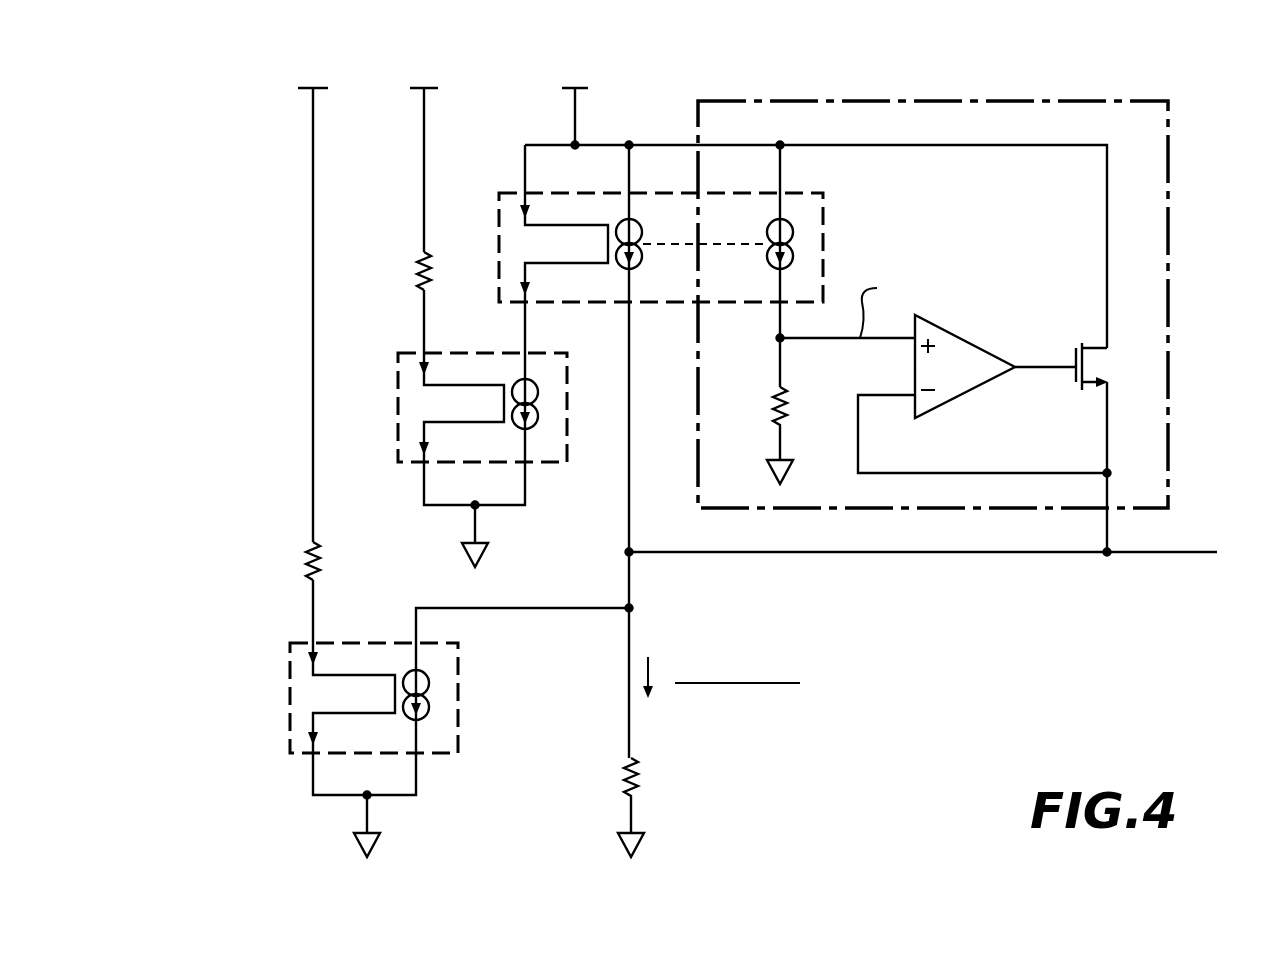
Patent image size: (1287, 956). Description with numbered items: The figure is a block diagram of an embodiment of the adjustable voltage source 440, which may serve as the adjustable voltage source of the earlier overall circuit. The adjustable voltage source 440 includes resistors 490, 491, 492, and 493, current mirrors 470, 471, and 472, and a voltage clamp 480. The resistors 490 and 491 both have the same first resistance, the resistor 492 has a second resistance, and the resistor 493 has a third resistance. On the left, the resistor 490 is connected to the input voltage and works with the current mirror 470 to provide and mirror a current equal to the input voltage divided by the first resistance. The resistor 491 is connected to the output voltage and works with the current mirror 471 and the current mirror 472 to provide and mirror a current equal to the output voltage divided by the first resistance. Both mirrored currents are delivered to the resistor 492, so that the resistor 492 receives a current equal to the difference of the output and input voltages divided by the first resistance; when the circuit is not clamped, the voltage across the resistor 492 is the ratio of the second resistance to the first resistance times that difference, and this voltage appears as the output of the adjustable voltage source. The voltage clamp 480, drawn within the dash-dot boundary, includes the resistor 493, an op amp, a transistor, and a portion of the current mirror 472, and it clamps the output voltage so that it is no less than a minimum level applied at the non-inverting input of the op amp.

The adjustable voltage source 440 is at (188, 95).
The current mirror 470 is at (288, 656).
The current mirror 471 is at (396, 365).
The current mirror 472 is at (503, 193).
The voltage clamp 480 is at (780, 101).
The resistor 490 is at (305, 545).
The resistor 491 is at (414, 253).
The resistor 492 is at (622, 760).
The resistor 493 is at (778, 387).